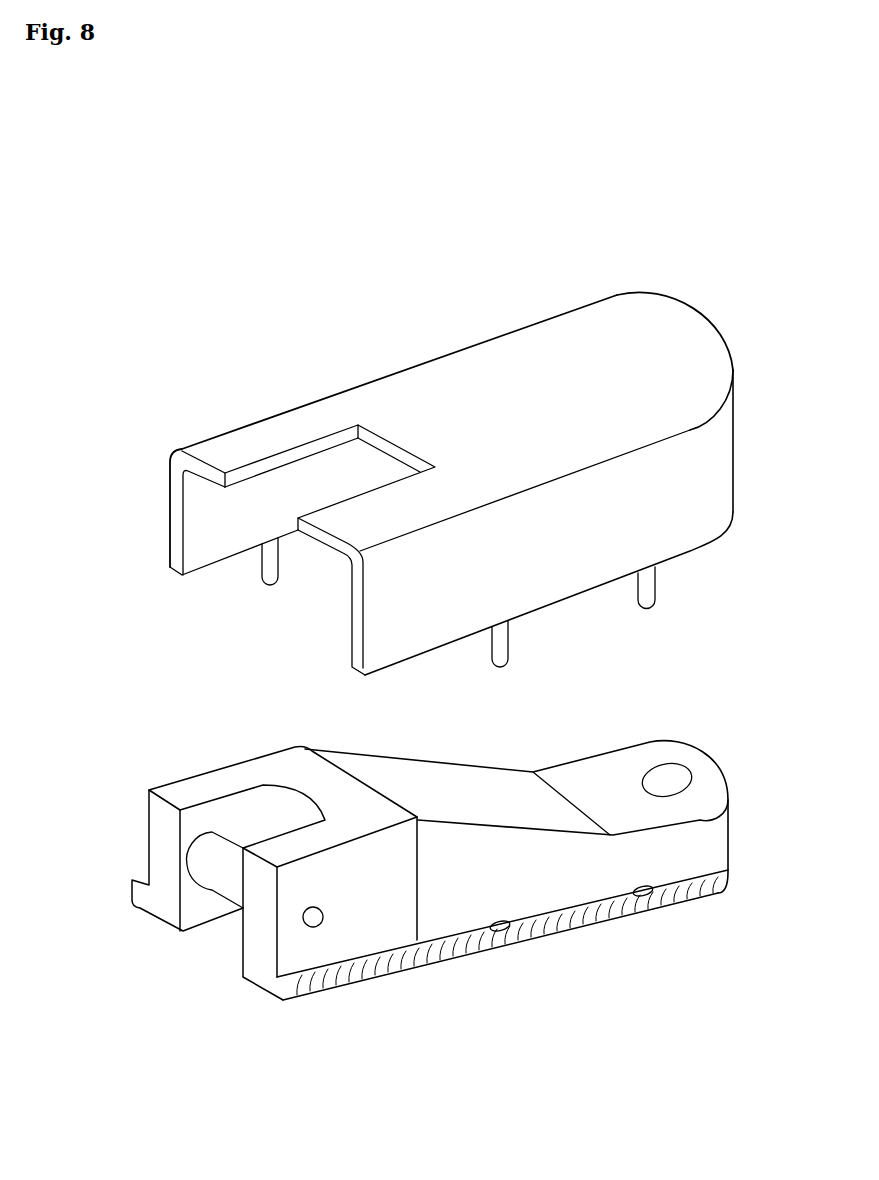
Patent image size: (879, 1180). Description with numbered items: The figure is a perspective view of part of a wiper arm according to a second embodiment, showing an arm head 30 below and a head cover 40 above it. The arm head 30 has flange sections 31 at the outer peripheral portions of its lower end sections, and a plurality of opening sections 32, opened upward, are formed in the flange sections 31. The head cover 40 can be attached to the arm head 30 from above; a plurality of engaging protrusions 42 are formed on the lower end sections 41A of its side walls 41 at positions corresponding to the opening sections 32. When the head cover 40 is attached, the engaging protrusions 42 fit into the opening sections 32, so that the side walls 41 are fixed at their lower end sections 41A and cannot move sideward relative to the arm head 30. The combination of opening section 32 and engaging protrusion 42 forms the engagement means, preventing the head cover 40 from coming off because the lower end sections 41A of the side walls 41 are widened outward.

The arm head 30 is at (456, 866).
The flange section 31 is at (577, 908).
The opening section 32 is at (507, 932).
The head cover 40 is at (449, 504).
The side wall 41 is at (220, 517).
The lower end section 41A is at (200, 575).
The engaging protrusion 42 is at (268, 585).